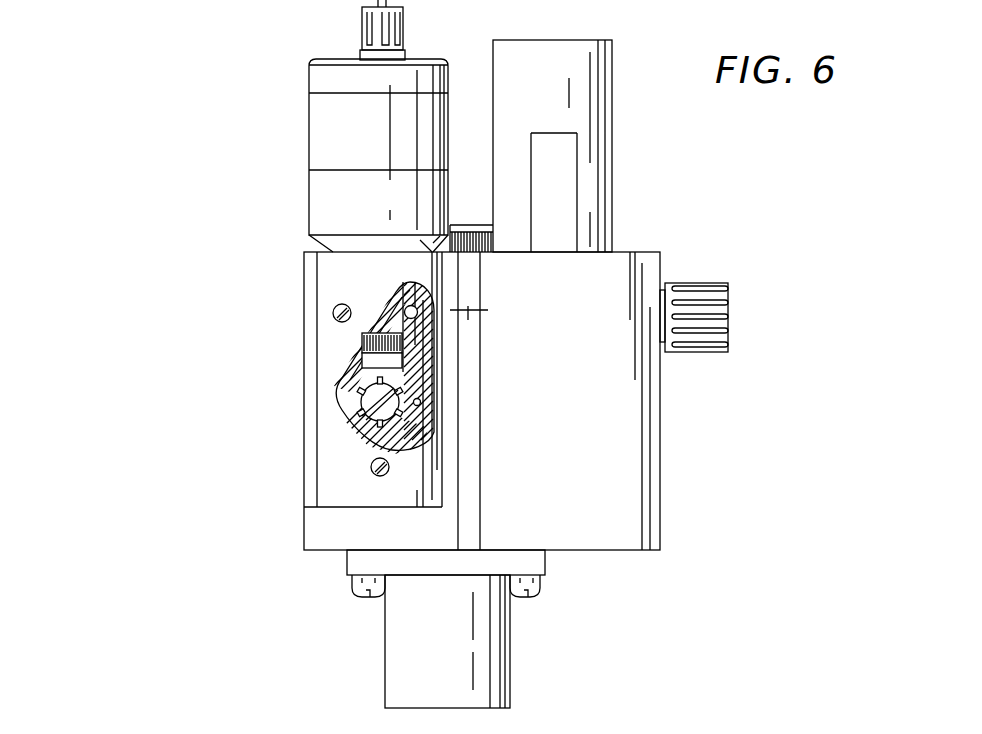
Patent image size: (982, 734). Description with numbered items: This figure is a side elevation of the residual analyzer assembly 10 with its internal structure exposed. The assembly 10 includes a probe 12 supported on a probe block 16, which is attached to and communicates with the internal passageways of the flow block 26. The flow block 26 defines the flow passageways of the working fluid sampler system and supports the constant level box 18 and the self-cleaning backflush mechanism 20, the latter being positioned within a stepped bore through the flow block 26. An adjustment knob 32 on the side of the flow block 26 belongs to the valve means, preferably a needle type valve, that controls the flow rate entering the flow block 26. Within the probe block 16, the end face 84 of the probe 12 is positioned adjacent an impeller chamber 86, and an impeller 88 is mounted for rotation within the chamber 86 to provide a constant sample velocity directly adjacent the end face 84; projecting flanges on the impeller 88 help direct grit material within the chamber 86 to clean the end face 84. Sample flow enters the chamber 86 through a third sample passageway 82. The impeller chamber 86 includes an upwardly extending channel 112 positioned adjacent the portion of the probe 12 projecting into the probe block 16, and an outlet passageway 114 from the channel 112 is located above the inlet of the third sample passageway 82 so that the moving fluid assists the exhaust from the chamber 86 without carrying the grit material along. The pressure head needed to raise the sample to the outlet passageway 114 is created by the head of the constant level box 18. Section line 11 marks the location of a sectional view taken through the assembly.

The residual analyzer assembly 10 is at (738, 192).
The section line 11 is at (273, 402).
The probe 12 is at (309, 133).
The probe block 16 is at (326, 502).
The constant level box 18 is at (612, 140).
The self-cleaning backflush mechanism 20 is at (492, 652).
The flow block 26 is at (622, 543).
The adjustment knob 32 is at (728, 286).
The third sample passageway 82 is at (425, 400).
The end face 84 is at (392, 362).
The impeller chamber 86 is at (397, 427).
The impeller 88 is at (392, 408).
The upwardly extending channel 112 is at (405, 345).
The outlet passageway 114 is at (416, 315).